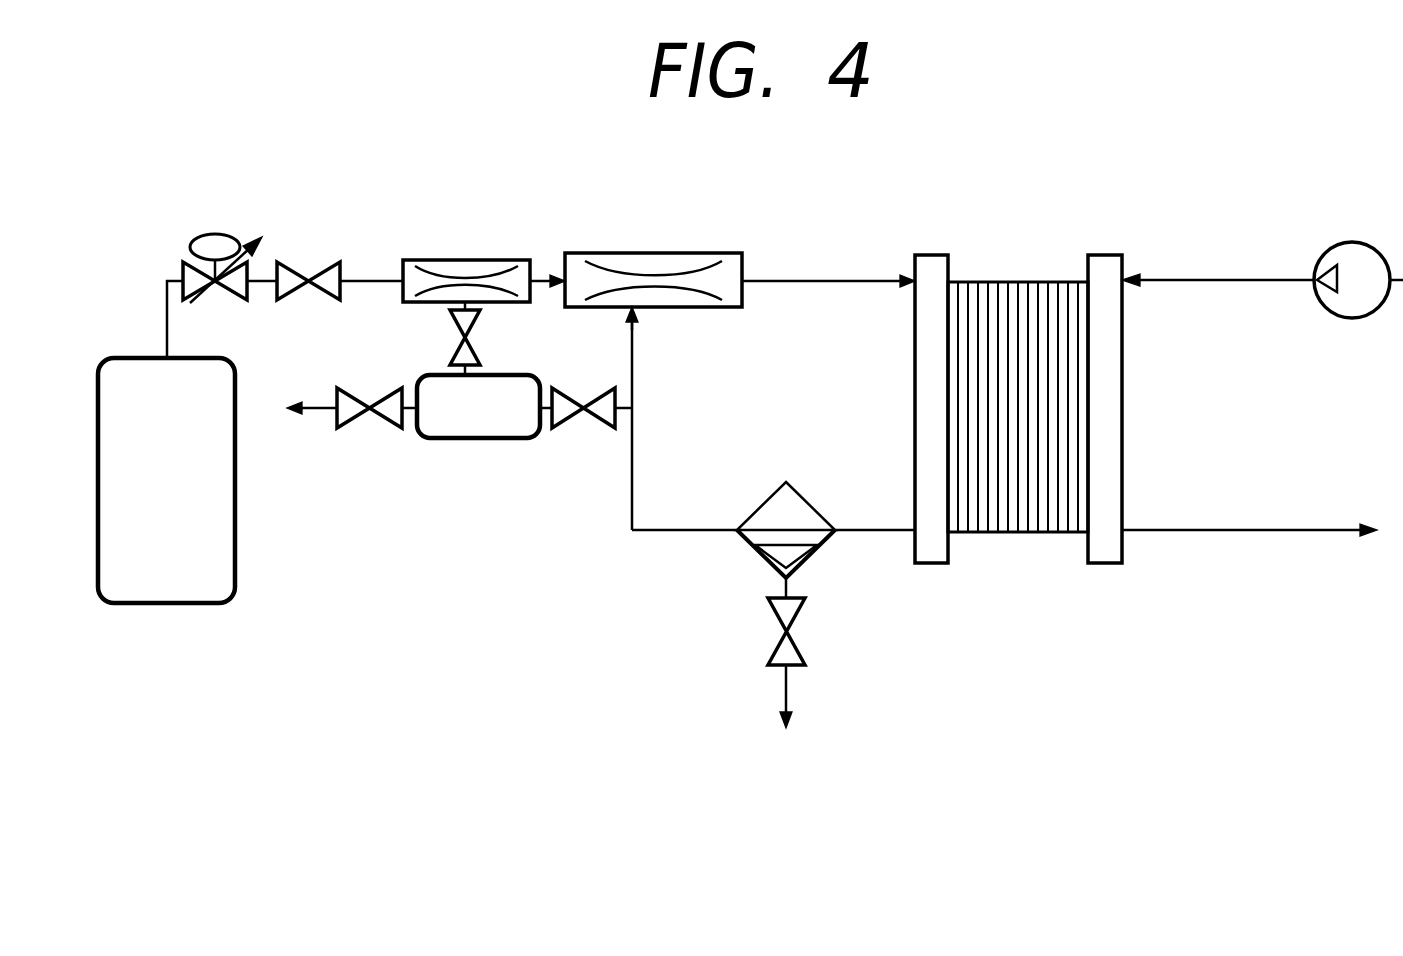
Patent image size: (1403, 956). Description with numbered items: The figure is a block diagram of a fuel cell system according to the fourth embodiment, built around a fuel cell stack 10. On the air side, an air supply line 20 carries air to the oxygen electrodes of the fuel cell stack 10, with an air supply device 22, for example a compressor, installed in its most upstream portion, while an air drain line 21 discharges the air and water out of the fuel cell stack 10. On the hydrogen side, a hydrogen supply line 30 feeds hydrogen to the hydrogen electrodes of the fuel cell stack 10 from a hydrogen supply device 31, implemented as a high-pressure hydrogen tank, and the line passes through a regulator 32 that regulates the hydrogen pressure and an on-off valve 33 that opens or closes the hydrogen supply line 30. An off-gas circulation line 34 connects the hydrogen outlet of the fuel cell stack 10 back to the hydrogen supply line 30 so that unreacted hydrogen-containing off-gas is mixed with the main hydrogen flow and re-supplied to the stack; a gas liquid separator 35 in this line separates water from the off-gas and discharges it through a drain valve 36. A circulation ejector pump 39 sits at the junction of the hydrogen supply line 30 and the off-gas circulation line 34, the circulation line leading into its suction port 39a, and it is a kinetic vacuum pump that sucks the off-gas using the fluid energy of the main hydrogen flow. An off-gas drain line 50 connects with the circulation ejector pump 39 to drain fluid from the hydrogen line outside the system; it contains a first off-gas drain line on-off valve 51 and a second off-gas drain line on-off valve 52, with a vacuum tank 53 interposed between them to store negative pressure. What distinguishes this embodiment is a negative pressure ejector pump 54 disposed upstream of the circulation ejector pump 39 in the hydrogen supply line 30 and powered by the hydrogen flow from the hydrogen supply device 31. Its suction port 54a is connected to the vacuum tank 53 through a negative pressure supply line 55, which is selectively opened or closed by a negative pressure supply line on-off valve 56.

The fuel cell stack 10 is at (1010, 532).
The air supply line 20 is at (1208, 282).
The air drain line 21 is at (1272, 532).
The air supply device 22 is at (1353, 318).
The hydrogen supply line 30 is at (167, 325).
The hydrogen supply device 31 is at (175, 603).
The regulator 32 is at (208, 232).
The on-off valve 33 is at (308, 282).
The off-gas circulation line 34 is at (632, 367).
The gas liquid separator 35 is at (800, 492).
The drain valve 36 is at (790, 630).
The circulation ejector pump 39 is at (697, 253).
The suction port 39a is at (638, 310).
The off-gas drain line 50 is at (323, 410).
The first off-gas drain line on-off valve 51 is at (582, 425).
The second off-gas drain line on-off valve 52 is at (365, 425).
The vacuum tank 53 is at (470, 438).
The negative pressure ejector pump 54 is at (473, 260).
The suction port 54a is at (462, 305).
The negative pressure supply line 55 is at (477, 370).
The negative pressure supply line on-off valve 56 is at (453, 360).